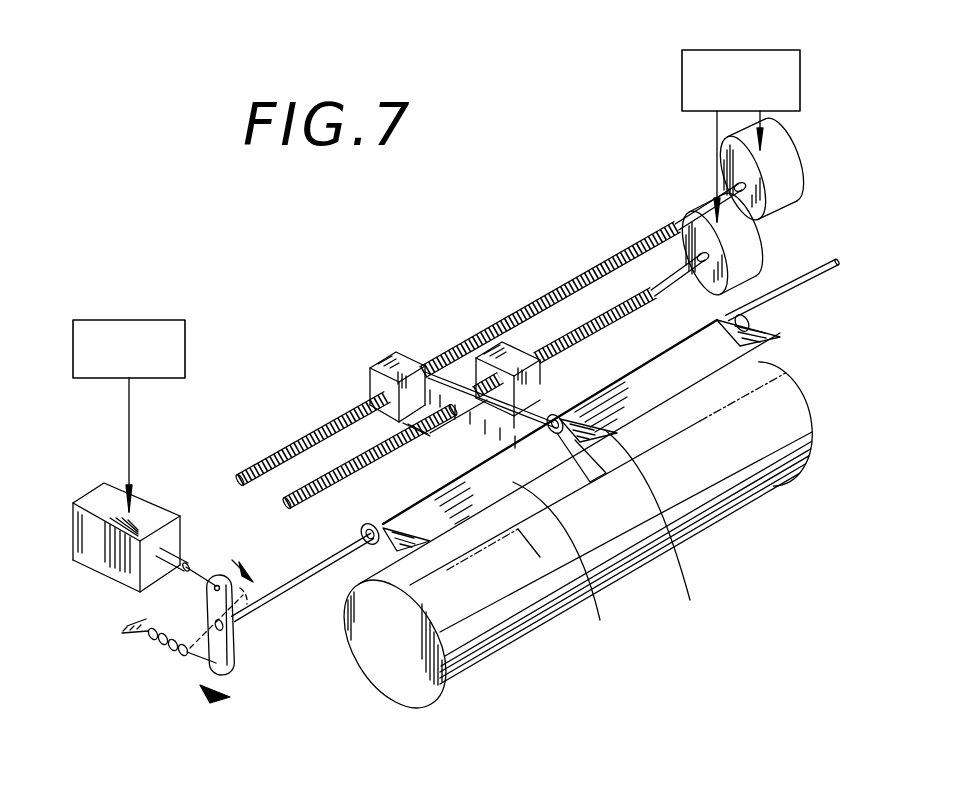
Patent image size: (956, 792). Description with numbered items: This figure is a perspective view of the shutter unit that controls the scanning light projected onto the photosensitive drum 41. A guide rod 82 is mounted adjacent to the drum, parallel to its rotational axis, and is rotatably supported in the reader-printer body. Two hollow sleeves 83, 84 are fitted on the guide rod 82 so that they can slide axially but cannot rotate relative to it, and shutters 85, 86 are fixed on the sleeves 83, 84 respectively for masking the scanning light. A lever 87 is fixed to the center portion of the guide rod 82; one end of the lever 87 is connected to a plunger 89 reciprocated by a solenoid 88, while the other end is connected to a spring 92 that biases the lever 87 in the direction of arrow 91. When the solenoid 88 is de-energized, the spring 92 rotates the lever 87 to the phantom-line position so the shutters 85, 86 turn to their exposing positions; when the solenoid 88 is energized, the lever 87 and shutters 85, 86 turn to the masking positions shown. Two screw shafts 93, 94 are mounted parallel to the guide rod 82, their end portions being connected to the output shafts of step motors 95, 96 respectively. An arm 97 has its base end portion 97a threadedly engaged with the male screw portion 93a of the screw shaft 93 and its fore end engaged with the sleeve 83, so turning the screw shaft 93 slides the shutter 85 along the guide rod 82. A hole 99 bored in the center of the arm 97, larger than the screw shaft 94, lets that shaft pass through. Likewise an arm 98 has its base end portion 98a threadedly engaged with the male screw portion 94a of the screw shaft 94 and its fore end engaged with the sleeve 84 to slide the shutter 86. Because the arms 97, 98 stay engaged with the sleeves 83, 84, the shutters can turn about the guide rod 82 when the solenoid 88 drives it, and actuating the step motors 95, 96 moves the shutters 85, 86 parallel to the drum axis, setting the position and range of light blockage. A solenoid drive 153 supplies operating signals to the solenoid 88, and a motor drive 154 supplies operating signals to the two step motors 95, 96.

The photosensitive drum 41 is at (390, 672).
The guide rod 82 is at (793, 290).
The hollow sleeve 83 is at (352, 556).
The hollow sleeve 84 is at (690, 582).
The shutter 85 is at (566, 569).
The shutter 86 is at (755, 381).
The lever 87 is at (237, 650).
The solenoid 88 is at (102, 570).
The plunger 89 is at (180, 560).
The arrow 91 is at (230, 558).
The spring 92 is at (158, 646).
The screw shaft 93 is at (585, 274).
The male screw portion 93a is at (293, 447).
The screw shaft 94 is at (627, 304).
The male screw portion 94a is at (343, 476).
The step motor 95 is at (787, 157).
The step motor 96 is at (757, 244).
The arm 97 is at (470, 432).
The base end portion 97a is at (387, 366).
The arm 98 is at (548, 390).
The base end portion 98a is at (512, 346).
The hole 99 is at (437, 386).
The solenoid drive 153 is at (188, 352).
The motor drive 154 is at (740, 50).